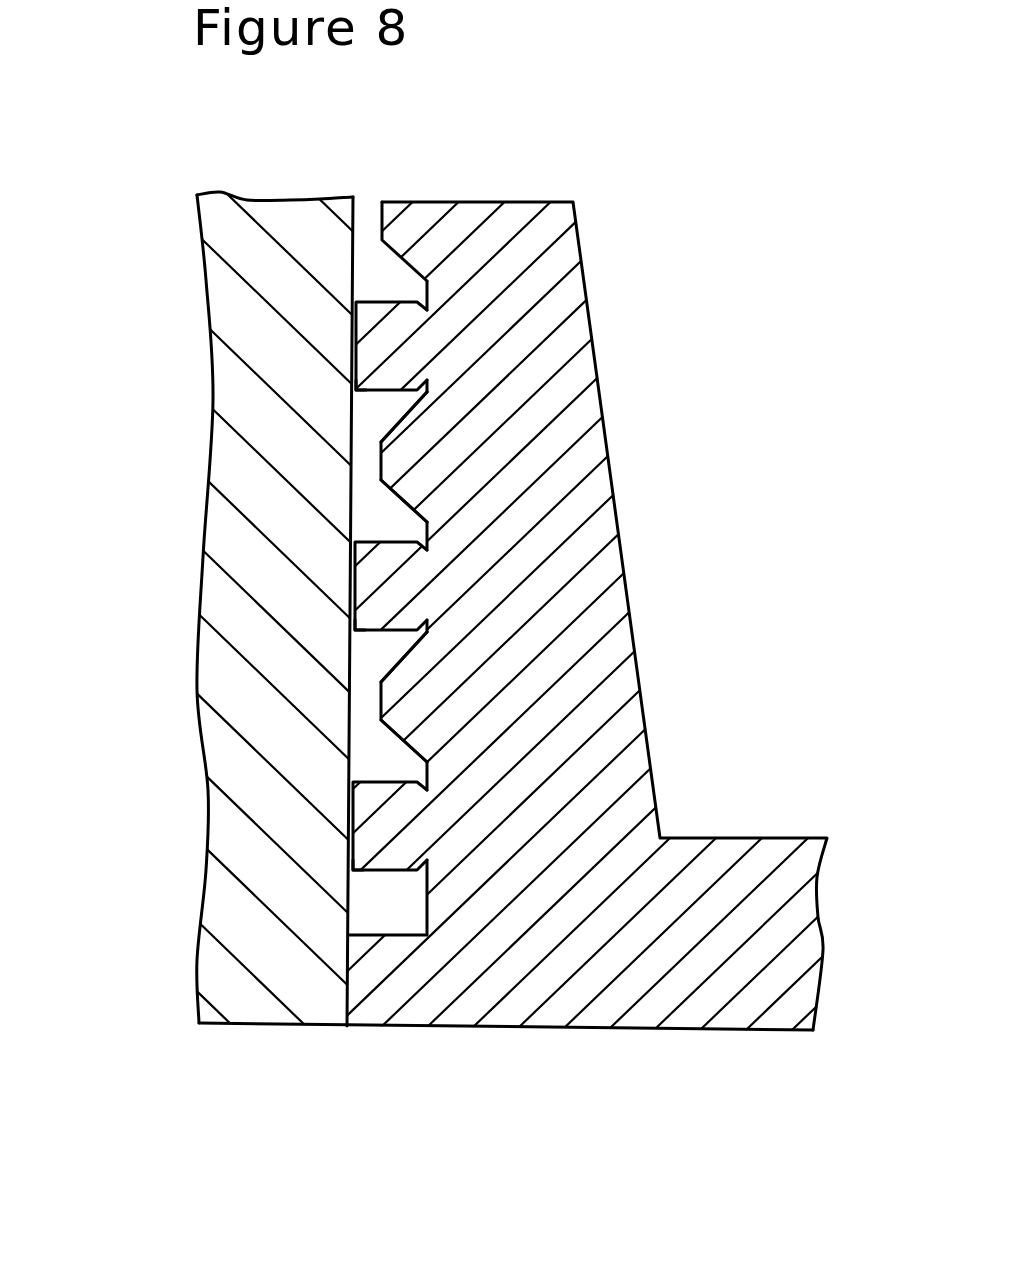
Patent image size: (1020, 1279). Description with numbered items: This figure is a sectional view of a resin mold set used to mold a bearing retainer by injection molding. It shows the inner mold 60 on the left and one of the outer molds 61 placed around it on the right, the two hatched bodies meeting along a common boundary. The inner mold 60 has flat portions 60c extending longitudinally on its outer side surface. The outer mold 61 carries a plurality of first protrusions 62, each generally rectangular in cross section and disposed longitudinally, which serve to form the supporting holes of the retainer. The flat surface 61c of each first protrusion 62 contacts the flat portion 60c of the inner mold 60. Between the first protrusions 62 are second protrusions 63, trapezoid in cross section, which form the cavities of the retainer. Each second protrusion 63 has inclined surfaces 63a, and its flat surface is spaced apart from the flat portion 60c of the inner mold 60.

The inner mold 60 is at (266, 1000).
The flat portion 60c is at (350, 906).
The outer mold 61 is at (618, 631).
The flat surface 61c is at (356, 376).
The first protrusion 62 is at (372, 342).
The second protrusion 63 is at (392, 230).
The inclined surface 63a is at (390, 438).